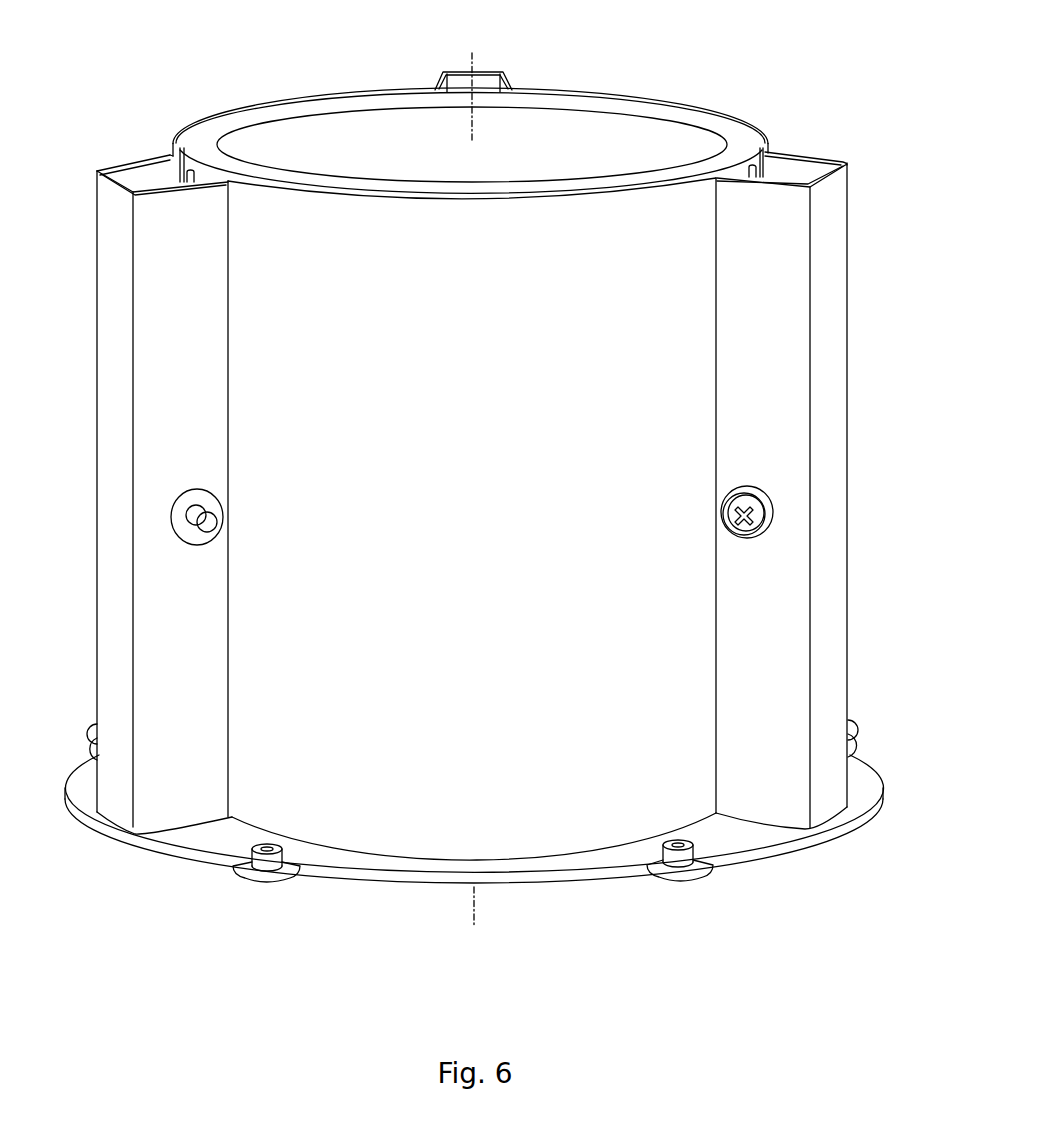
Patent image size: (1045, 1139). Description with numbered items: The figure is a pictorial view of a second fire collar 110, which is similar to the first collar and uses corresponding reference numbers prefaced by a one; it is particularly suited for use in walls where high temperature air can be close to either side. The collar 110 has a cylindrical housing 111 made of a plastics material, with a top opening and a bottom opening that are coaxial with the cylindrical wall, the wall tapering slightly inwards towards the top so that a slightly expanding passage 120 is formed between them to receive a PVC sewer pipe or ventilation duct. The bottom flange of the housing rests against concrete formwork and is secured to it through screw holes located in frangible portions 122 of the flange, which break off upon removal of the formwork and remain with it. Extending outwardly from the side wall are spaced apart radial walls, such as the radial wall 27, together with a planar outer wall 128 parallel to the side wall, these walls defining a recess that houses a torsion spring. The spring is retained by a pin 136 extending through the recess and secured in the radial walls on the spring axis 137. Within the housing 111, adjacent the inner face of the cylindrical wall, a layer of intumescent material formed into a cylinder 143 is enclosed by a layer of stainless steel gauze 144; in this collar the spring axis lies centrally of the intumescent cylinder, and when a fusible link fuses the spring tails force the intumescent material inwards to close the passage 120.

The fire collar 110 is at (668, 63).
The cylindrical housing 111 is at (474, 747).
The passage 120 is at (613, 138).
The frangible portion 122 is at (675, 866).
The outer wall 128 is at (120, 433).
The pin 136 is at (202, 510).
The spring axis 137 is at (215, 530).
The intumescent cylinder 143 is at (323, 107).
The stainless steel gauze 144 is at (607, 90).
The radial wall 27 is at (730, 630).